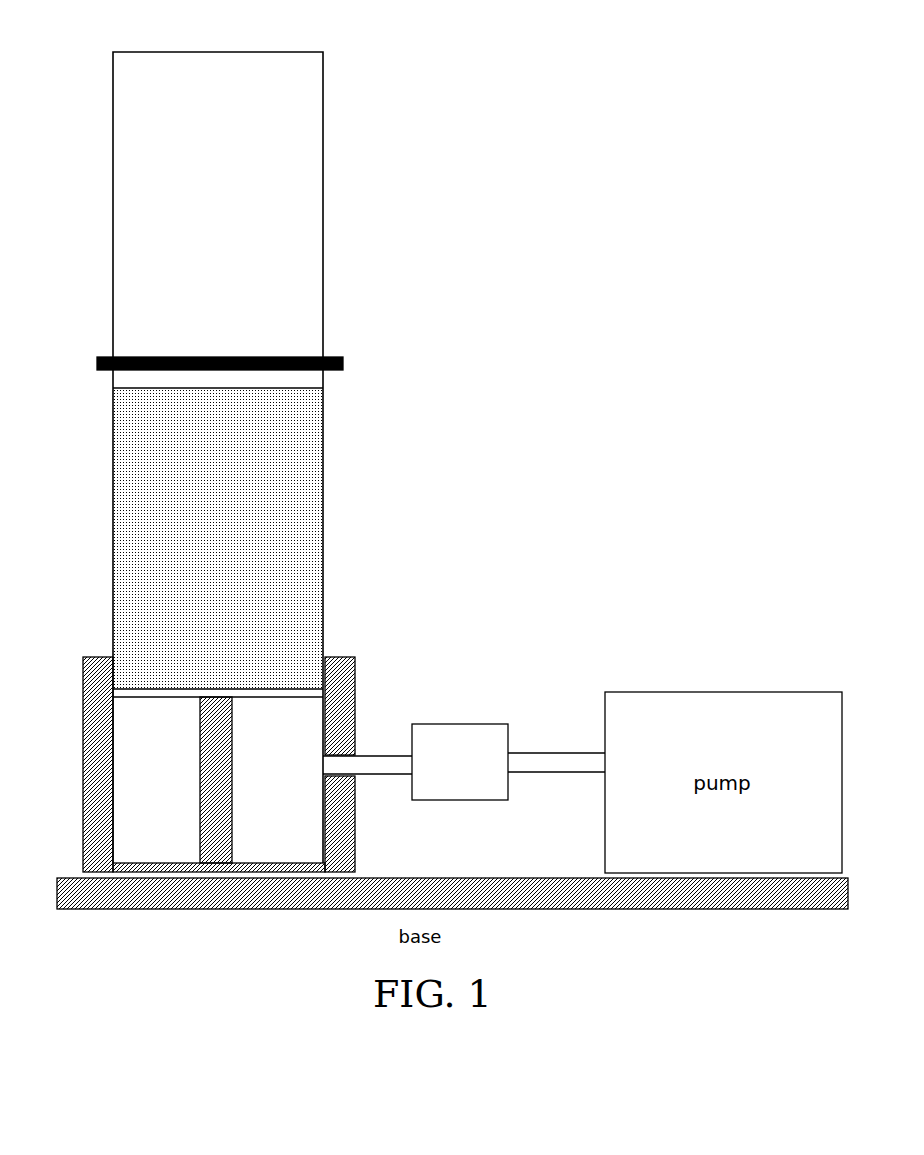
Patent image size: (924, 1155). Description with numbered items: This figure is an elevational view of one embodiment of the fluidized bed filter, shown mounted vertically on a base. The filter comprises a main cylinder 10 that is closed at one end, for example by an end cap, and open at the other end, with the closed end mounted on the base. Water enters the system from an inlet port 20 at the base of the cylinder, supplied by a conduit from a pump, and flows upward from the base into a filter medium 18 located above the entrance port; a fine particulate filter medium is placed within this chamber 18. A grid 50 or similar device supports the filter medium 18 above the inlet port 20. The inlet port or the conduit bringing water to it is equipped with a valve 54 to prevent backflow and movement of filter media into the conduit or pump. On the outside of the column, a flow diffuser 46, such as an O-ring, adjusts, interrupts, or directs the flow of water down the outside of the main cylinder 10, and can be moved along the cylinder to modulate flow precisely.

The main cylinder 10 is at (323, 207).
The flow diffuser 46 is at (343, 357).
The filter medium 18 is at (280, 458).
The grid 50 is at (190, 689).
The inlet port 20 is at (370, 763).
The valve 54 is at (457, 730).